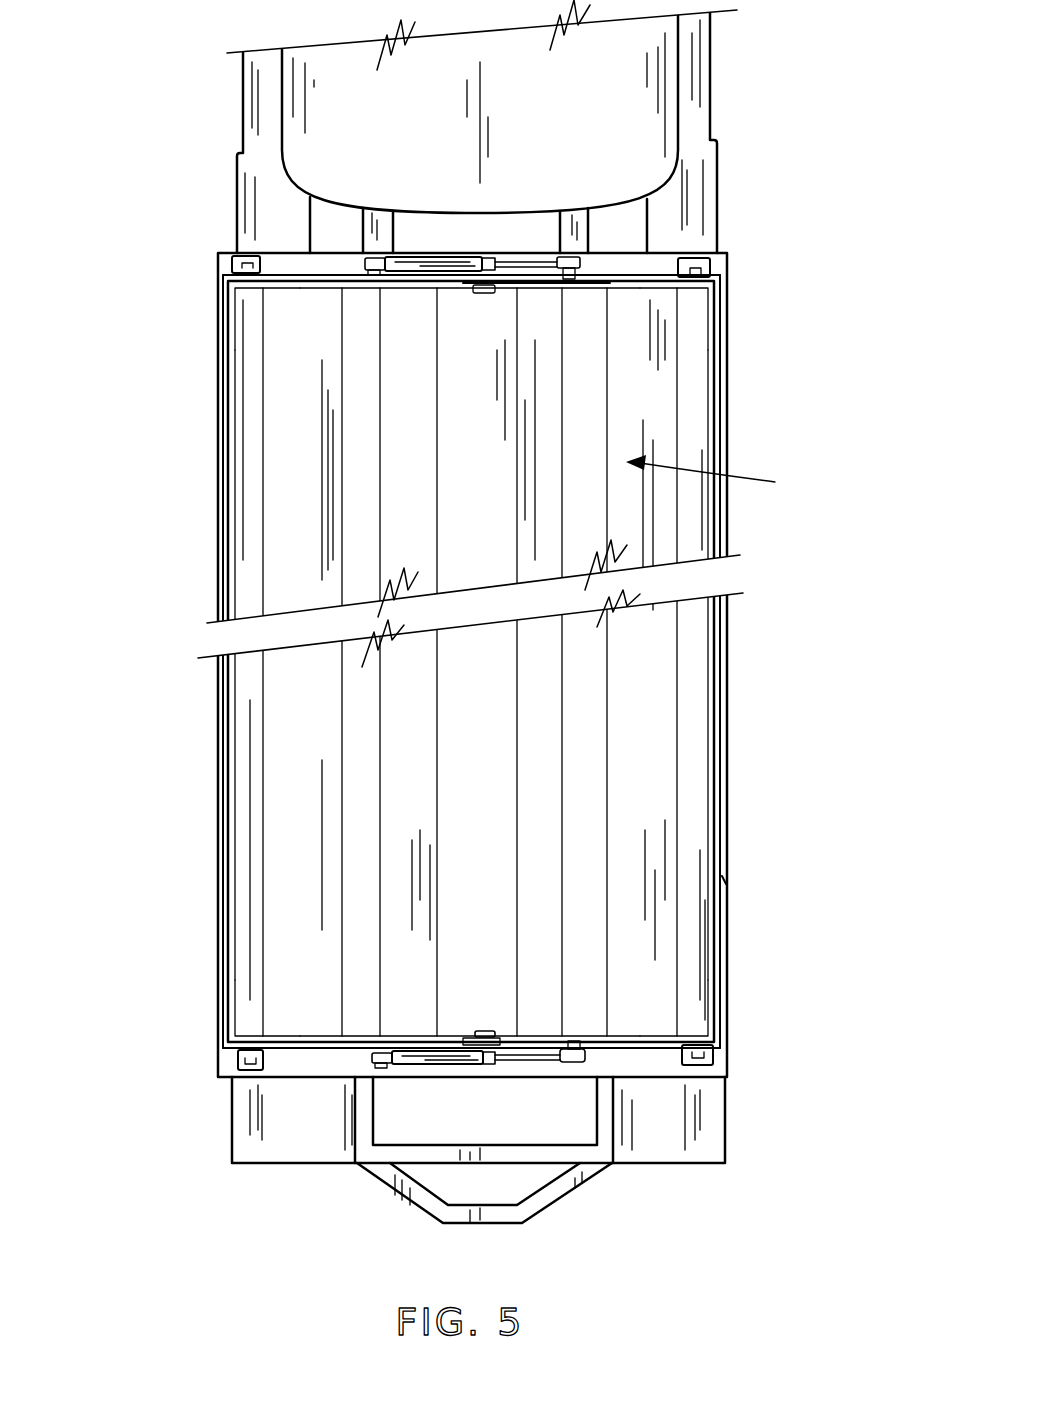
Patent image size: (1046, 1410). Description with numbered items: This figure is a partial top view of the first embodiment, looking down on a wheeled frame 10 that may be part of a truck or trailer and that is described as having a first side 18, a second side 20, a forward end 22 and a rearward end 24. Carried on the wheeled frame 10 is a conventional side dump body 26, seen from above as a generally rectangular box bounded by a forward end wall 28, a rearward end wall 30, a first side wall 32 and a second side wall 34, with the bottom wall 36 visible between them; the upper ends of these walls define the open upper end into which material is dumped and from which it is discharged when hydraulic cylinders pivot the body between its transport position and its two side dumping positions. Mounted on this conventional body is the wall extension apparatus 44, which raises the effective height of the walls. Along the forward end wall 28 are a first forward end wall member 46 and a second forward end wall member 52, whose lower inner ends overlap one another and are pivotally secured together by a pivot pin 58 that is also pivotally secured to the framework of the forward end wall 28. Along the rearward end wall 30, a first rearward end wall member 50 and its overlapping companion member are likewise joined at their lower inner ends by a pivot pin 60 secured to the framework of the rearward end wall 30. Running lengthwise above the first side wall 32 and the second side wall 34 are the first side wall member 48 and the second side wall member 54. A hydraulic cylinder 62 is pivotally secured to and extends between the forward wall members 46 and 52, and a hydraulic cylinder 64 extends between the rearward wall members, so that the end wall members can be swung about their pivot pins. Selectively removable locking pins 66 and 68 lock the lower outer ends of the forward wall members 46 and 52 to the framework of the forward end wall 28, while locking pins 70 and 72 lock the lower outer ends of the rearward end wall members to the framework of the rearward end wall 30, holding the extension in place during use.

The wheeled frame 10 is at (477, 642).
The first side 18 is at (481, 718).
The second side 20 is at (753, 738).
The forward end 22 is at (745, 86).
The rearward end 24 is at (483, 1226).
The side dump body 26 is at (720, 476).
The forward end wall 28 is at (633, 268).
The rearward end wall 30 is at (657, 1058).
The first side wall 32 is at (280, 862).
The second side wall 34 is at (670, 800).
The bottom wall 36 is at (492, 778).
The wall extension apparatus 44 is at (735, 880).
The first forward end wall member 46 is at (330, 283).
The first side wall member 48 is at (223, 720).
The first rearward end wall member 50 is at (312, 1040).
The second forward end wall member 52 is at (627, 288).
The second side wall member 54 is at (722, 648).
The pivot pin 58 is at (470, 662).
The pivot pin 60 is at (487, 1031).
The hydraulic cylinder 62 is at (430, 257).
The hydraulic cylinder 64 is at (440, 1064).
The locking pin 66 is at (232, 258).
The locking pin 68 is at (712, 267).
The locking pin 70 is at (238, 1060).
The locking pin 72 is at (712, 1055).